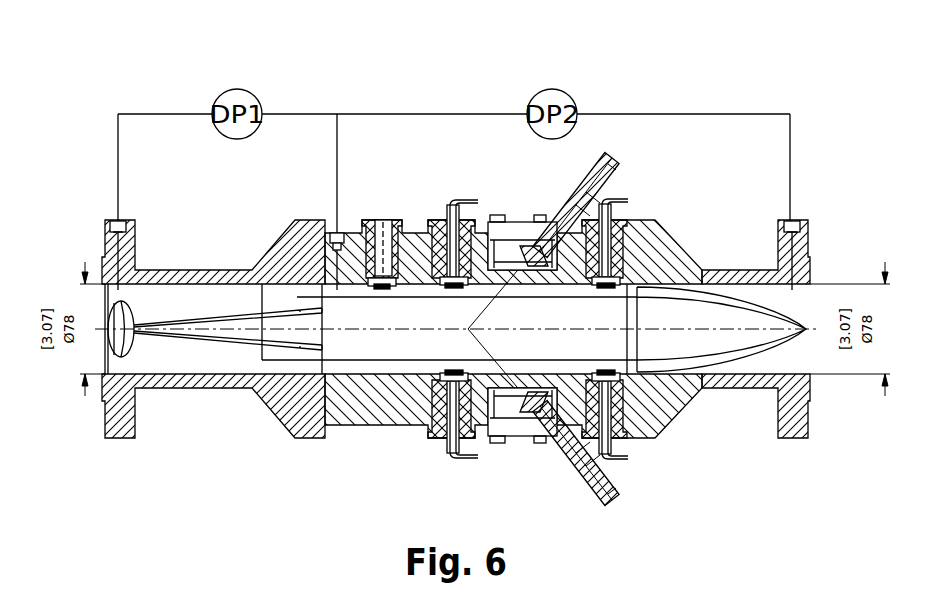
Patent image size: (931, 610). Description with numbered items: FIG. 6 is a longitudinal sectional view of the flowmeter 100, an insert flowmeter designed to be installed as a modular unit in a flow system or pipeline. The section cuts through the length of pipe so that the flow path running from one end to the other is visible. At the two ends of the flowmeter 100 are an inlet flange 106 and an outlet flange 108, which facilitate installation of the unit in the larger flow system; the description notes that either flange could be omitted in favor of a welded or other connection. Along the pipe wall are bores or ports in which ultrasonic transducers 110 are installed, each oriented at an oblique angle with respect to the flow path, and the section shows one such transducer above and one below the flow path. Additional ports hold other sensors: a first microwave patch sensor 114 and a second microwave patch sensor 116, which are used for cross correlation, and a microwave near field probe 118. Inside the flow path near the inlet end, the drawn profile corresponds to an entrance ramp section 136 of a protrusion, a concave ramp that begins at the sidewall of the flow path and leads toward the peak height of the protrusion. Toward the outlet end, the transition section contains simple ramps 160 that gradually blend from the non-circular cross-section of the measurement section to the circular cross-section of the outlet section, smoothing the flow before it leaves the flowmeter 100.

The flowmeter 100 is at (183, 99).
The inlet flange 106 is at (110, 233).
The outlet flange 108 is at (804, 241).
The ultrasonic transducers 110 is at (566, 187).
The first microwave patch sensor 114 is at (437, 214).
The second microwave patch sensor 116 is at (624, 214).
The microwave near field probe 118 is at (378, 214).
The entrance ramp section 136 is at (205, 333).
The ramps 160 is at (718, 318).